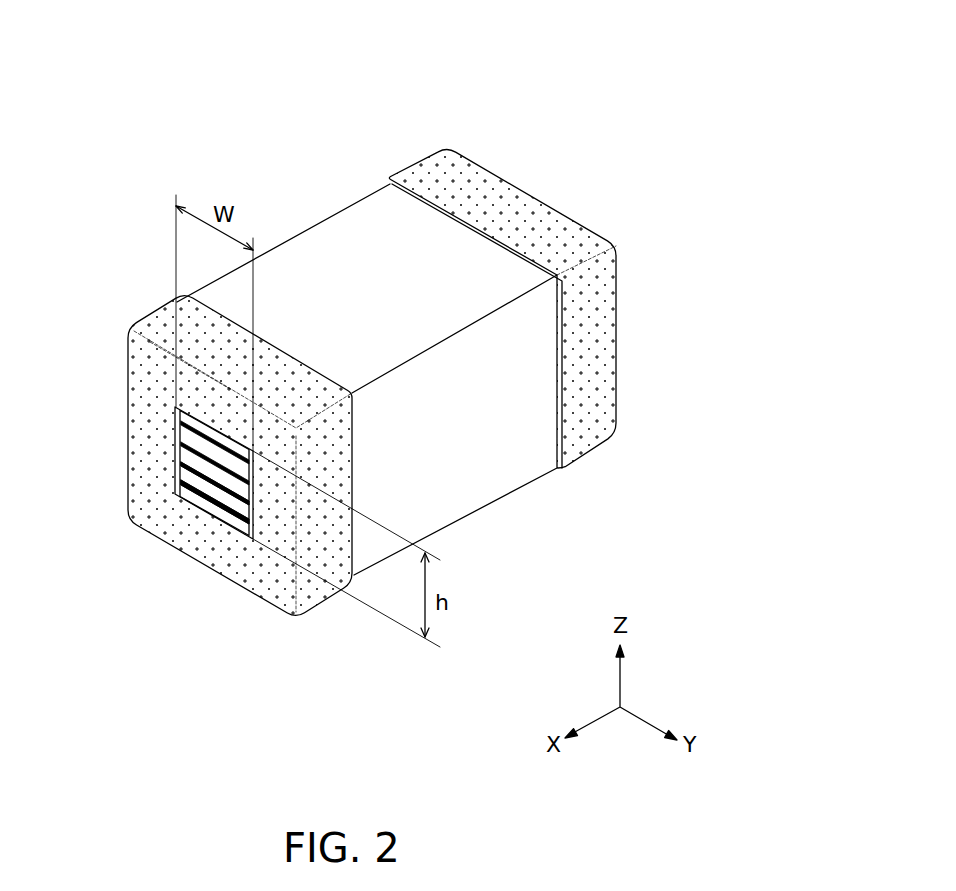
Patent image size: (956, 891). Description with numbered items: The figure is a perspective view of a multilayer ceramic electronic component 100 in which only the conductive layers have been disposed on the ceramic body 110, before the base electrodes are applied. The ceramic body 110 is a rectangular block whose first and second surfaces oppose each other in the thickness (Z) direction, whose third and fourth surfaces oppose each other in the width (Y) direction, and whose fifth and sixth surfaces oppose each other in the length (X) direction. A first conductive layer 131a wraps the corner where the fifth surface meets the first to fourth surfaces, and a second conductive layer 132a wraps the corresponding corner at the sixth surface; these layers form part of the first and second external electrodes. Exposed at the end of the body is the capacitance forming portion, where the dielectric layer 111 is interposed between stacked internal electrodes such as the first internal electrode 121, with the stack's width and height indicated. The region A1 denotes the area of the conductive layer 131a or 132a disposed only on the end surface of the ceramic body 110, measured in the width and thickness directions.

The multilayer ceramic electronic component 100 is at (131, 68).
The ceramic body 110 is at (343, 227).
The dielectric layer 111 is at (222, 475).
The first internal electrode 121 is at (236, 501).
The first conductive layer 131a is at (155, 317).
The second conductive layer 132a is at (487, 185).
The area of the first or second conductive layer A1 is at (152, 423).